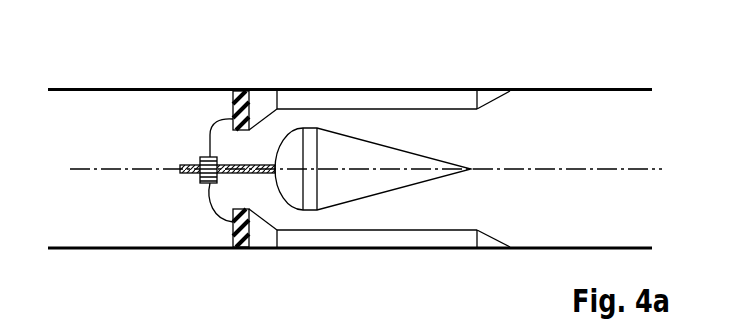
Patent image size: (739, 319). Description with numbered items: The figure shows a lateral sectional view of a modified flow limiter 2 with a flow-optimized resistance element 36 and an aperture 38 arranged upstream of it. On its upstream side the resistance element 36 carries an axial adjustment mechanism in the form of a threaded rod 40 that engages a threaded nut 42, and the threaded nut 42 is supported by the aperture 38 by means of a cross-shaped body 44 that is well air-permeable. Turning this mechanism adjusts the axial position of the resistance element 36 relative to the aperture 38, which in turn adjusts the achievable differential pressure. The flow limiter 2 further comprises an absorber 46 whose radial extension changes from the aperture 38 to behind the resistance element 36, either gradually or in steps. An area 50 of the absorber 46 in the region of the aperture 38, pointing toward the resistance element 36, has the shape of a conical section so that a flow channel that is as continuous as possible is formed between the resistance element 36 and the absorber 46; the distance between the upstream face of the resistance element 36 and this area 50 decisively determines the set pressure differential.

The flow limiter 2 is at (551, 53).
The resistance element 36 is at (345, 192).
The aperture 38 is at (234, 117).
The threaded rod 40 is at (237, 174).
The threaded nut 42 is at (201, 158).
The cross-shaped body 44 is at (210, 135).
The absorber 46 is at (428, 100).
The area 50 is at (256, 103).